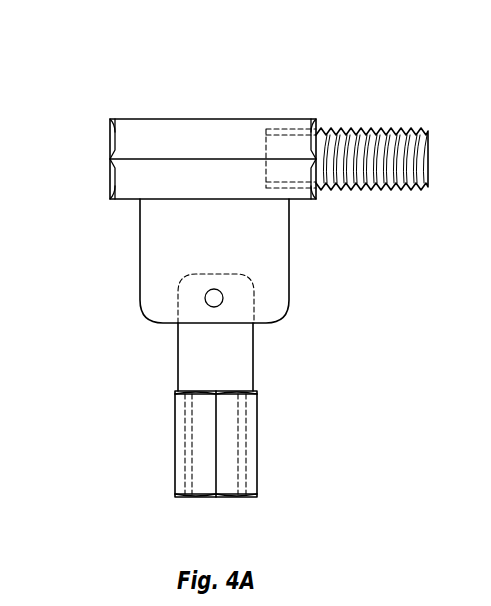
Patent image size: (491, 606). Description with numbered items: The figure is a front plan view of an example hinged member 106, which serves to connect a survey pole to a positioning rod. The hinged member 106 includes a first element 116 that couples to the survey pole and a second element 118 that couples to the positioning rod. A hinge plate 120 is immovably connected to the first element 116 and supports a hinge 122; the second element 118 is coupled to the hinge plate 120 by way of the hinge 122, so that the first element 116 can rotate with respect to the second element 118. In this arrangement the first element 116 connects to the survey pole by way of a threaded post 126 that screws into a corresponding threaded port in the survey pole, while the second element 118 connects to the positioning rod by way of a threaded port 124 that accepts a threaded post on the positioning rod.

The hinged member 106 is at (107, 77).
The first element 116 is at (228, 128).
The second element 118 is at (185, 447).
The hinge plate 120 is at (158, 257).
The hinge 122 is at (205, 298).
The threaded port 124 is at (220, 506).
The threaded post 126 is at (355, 190).